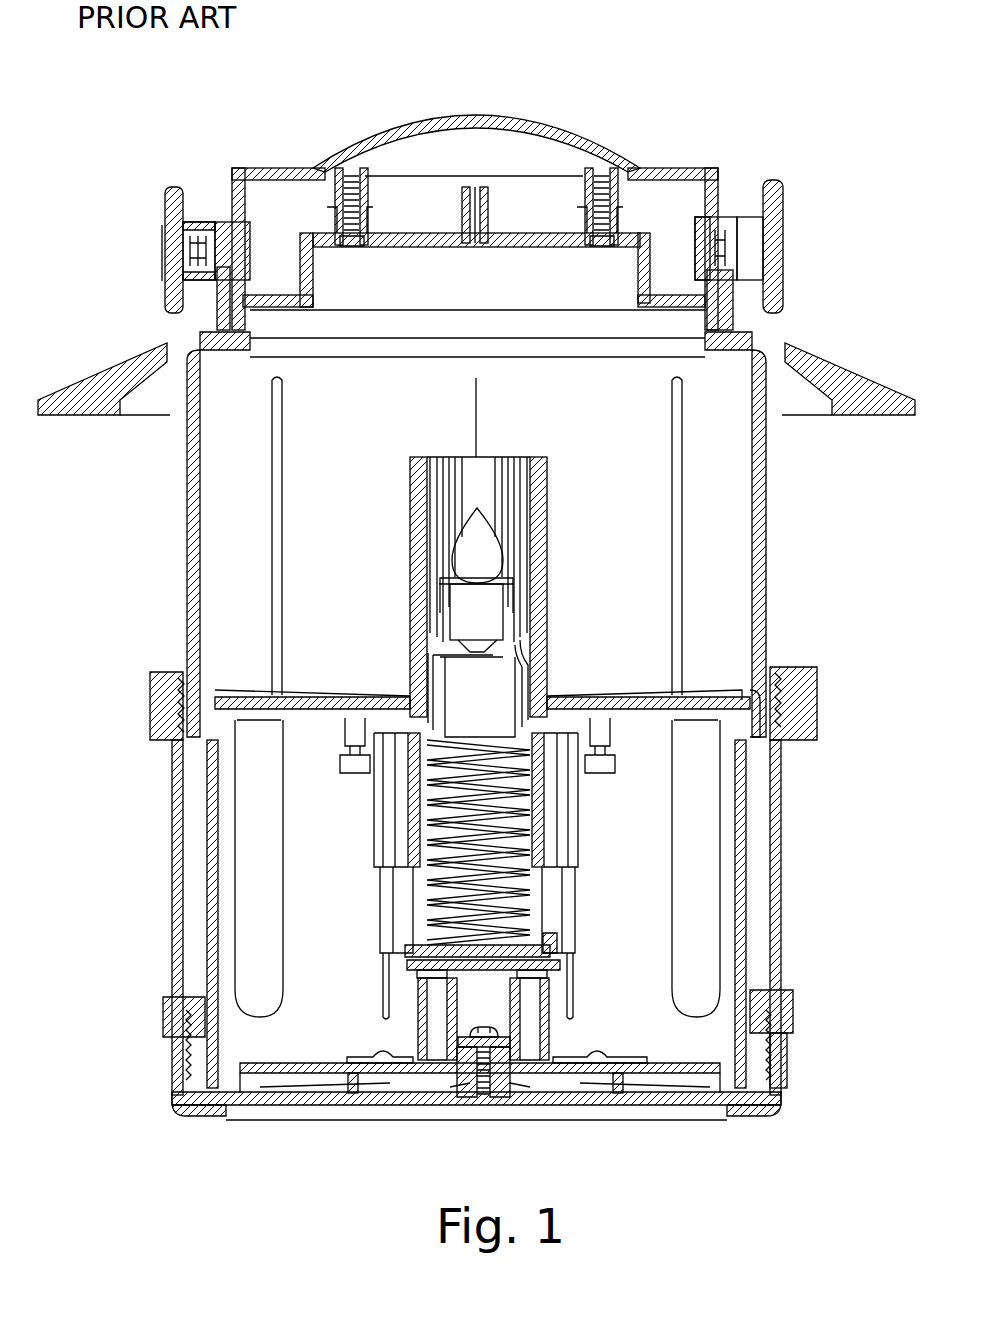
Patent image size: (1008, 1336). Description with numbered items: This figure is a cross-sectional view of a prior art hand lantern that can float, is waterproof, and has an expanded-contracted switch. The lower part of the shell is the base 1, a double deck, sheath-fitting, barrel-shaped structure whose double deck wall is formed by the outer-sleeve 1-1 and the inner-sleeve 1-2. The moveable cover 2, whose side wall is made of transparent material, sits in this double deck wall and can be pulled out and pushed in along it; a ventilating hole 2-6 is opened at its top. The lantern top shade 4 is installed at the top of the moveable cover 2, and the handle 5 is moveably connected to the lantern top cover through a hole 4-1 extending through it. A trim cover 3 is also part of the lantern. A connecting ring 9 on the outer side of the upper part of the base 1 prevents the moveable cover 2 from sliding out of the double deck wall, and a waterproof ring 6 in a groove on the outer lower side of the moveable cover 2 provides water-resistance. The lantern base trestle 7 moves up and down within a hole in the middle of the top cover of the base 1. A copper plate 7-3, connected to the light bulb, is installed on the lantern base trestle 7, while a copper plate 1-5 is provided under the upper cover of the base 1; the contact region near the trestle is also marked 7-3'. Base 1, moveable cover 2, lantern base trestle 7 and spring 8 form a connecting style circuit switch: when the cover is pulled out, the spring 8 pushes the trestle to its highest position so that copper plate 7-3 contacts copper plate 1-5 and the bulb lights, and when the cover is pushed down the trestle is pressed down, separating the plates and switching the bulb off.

The base 1 is at (786, 855).
The outer-sleeve 1-1 is at (787, 900).
The inner-sleeve 1-2 is at (752, 967).
The copper plate 1-5 is at (618, 745).
The moveable cover 2 is at (770, 637).
The ventilating hole 2-6 is at (478, 185).
The trim cover 3 is at (858, 360).
The lantern top shade 4 is at (587, 147).
The hole 4-1 is at (170, 240).
The handle 5 is at (750, 200).
The waterproof ring 6 is at (800, 702).
The lantern base trestle 7 is at (427, 818).
The copper plate 7-3 is at (643, 597).
The lamp contact 7-3' is at (294, 607).
The spring 8 is at (430, 903).
The connecting ring 9 is at (160, 680).